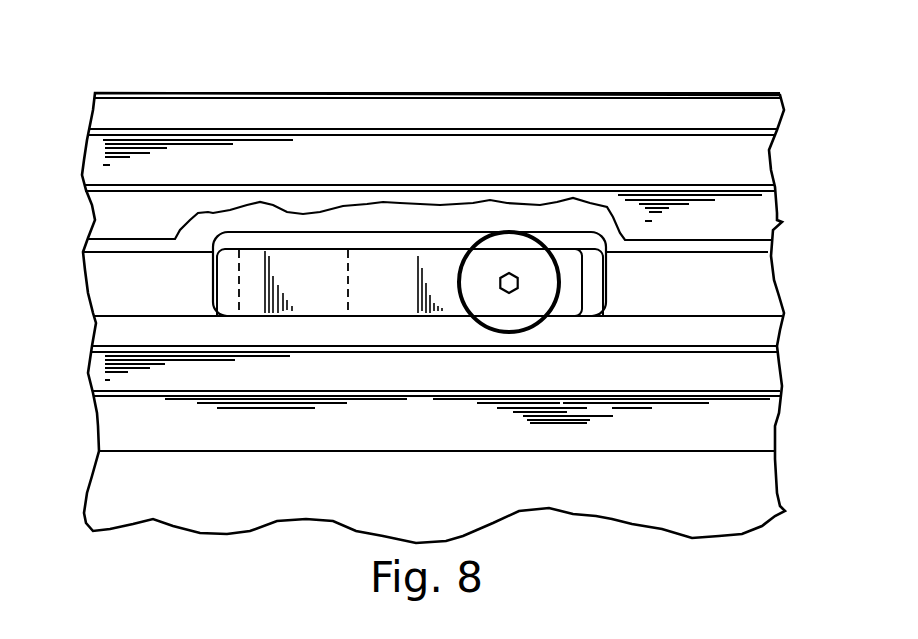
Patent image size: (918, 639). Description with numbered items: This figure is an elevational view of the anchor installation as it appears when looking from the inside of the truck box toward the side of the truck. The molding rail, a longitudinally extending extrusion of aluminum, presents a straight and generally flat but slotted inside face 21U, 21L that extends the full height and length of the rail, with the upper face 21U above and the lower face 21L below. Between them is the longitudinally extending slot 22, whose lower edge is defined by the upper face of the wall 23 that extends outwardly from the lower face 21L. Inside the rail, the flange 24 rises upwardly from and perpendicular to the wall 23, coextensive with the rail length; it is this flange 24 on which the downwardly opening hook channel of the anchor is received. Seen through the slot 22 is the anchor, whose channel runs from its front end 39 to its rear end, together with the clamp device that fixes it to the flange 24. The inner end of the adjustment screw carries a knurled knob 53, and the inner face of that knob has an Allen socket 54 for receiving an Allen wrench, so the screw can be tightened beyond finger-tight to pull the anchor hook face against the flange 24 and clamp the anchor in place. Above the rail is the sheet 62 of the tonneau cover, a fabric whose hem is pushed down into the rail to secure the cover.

The sheet 62 is at (163, 93).
The inside face 21U is at (454, 147).
The knurled knob 53 is at (503, 250).
The Allen socket 54 is at (515, 272).
The front end 39 is at (608, 283).
The slot 22 is at (783, 278).
The wall 23 is at (740, 315).
The flange 24 is at (162, 283).
The inside face 21L is at (192, 380).